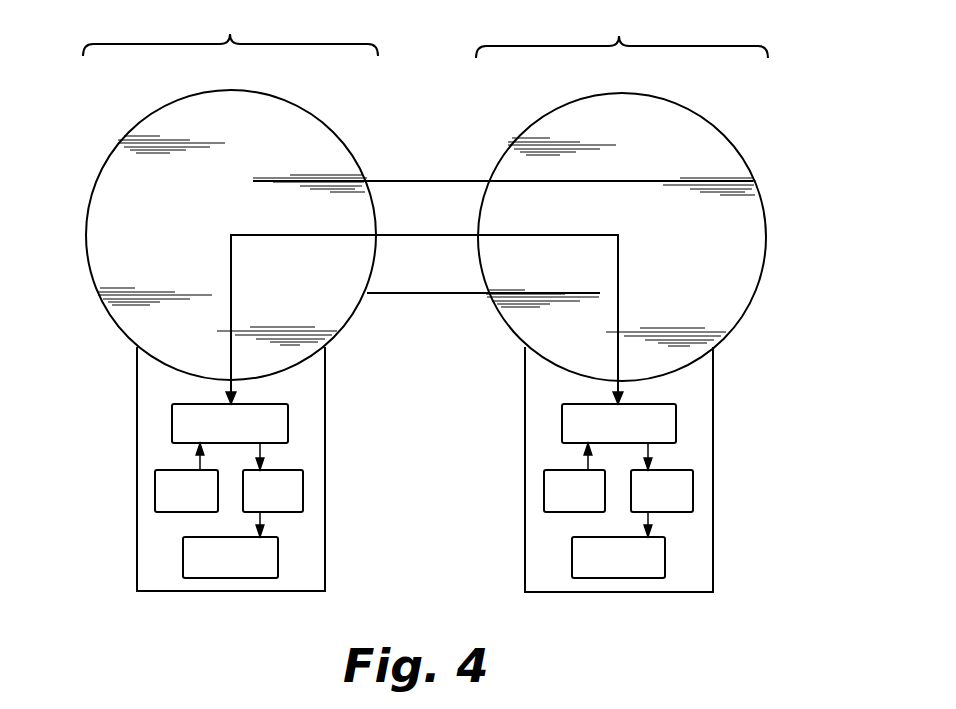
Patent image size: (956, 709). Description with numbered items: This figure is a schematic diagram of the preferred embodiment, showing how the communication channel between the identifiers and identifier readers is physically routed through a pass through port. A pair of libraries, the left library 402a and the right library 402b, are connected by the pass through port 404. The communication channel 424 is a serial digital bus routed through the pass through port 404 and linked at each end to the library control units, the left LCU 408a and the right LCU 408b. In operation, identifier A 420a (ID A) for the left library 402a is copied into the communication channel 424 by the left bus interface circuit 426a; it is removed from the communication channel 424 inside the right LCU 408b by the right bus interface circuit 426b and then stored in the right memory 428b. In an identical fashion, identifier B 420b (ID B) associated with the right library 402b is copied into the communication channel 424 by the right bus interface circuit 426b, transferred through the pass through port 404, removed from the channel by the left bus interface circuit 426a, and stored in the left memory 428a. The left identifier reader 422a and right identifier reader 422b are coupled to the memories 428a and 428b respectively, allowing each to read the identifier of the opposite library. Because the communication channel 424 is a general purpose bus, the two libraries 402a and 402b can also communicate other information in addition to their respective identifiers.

The left library 402a is at (230, 193).
The right library 402b is at (622, 194).
The pass through port 404 is at (418, 183).
The communication channel 424 is at (438, 236).
The left LCU 408a is at (152, 557).
The right LCU 408b is at (543, 557).
The left bus interface circuit 426a is at (172, 416).
The identifier A 420a is at (155, 483).
The left memory 428a is at (303, 496).
The left identifier reader 422a is at (278, 561).
The right bus interface circuit 426b is at (562, 416).
The identifier B 420b is at (544, 483).
The right memory 428b is at (693, 496).
The right identifier reader 422b is at (665, 561).